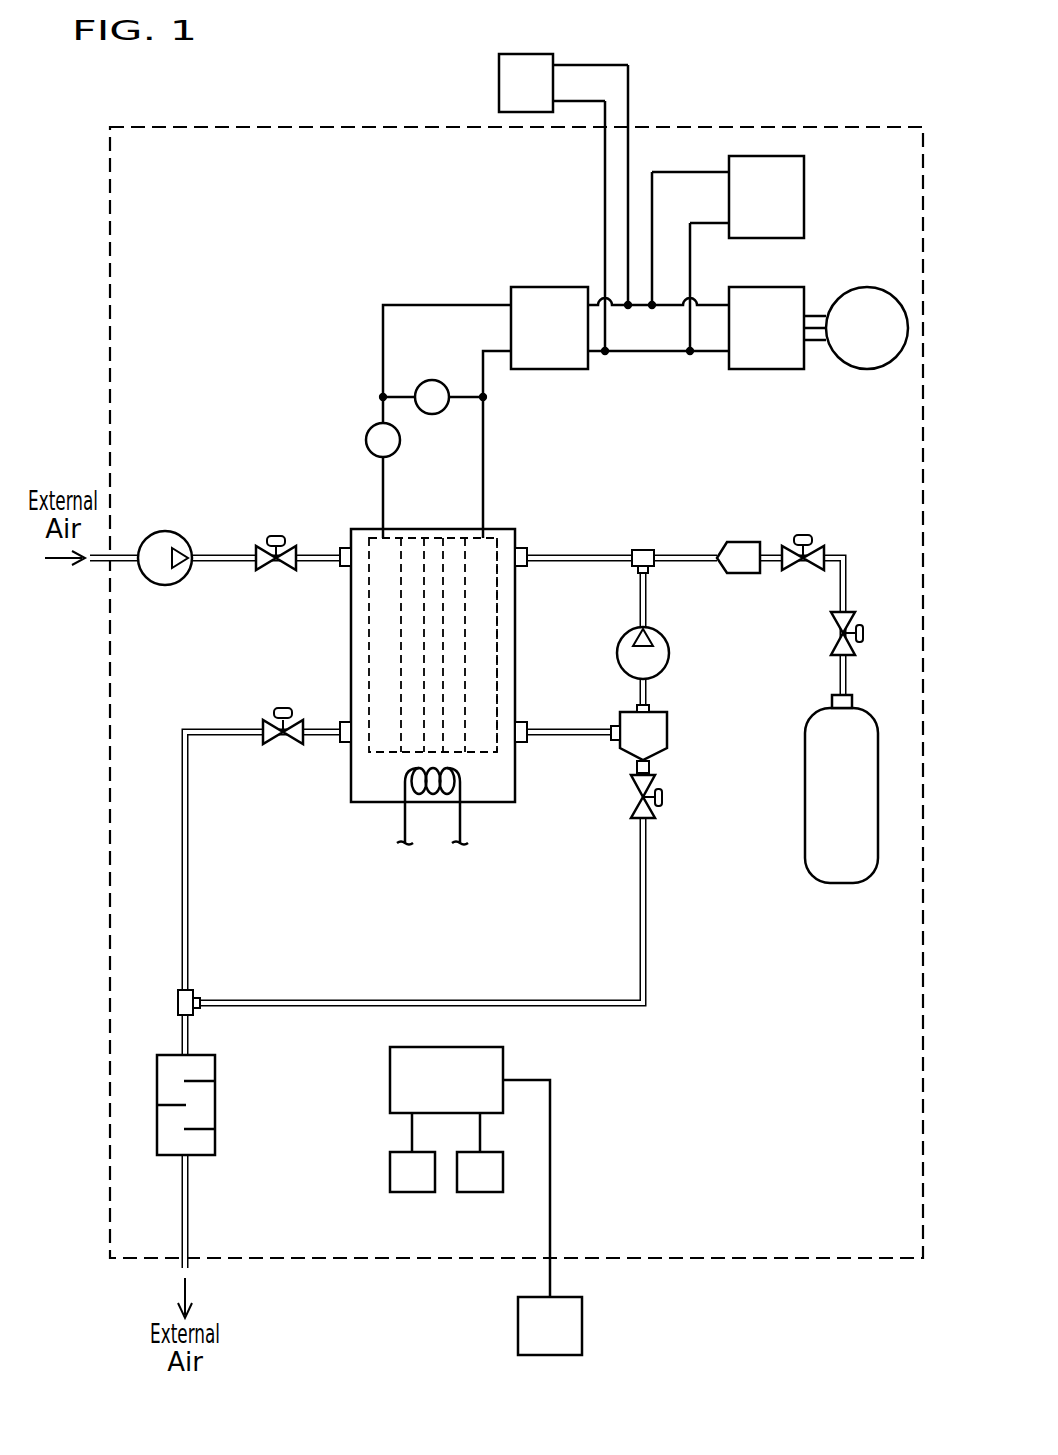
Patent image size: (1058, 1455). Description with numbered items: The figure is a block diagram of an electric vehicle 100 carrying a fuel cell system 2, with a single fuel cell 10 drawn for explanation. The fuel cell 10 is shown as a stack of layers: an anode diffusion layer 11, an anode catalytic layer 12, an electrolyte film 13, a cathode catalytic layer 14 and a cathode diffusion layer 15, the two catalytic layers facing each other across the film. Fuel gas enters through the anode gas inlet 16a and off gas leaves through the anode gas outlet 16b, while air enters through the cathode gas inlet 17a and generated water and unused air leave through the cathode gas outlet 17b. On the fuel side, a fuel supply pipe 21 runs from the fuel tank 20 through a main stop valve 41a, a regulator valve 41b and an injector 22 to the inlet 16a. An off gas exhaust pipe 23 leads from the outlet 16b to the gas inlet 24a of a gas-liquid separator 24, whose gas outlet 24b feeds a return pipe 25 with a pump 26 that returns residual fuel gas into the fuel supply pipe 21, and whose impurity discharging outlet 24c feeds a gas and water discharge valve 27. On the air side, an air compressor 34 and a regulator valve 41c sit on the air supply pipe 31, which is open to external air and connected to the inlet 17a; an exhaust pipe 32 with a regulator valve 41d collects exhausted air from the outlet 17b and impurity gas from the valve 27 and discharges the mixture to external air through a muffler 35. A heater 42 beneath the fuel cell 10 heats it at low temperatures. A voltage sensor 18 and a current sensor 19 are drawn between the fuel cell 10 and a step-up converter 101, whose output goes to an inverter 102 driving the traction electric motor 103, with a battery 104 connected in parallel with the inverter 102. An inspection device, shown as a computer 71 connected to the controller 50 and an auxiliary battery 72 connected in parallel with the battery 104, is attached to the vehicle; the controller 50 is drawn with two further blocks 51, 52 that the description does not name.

The fuel cell system 2 is at (186, 400).
The electric vehicle 100 is at (847, 125).
The fuel cell 10 is at (517, 538).
The anode diffusion layer 11 is at (497, 531).
The anode catalytic layer 12 is at (453, 531).
The electrolyte film 13 is at (435, 531).
The cathode catalytic layer 14 is at (413, 531).
The cathode diffusion layer 15 is at (372, 531).
The anode gas inlet 16a is at (524, 568).
The anode gas outlet 16b is at (527, 722).
The cathode gas inlet 17a is at (343, 568).
The cathode gas outlet 17b is at (340, 722).
The voltage sensor 18 is at (437, 380).
The current sensor 19 is at (366, 440).
The fuel tank 20 is at (850, 885).
The fuel supply pipe 21 is at (848, 580).
The injector 22 is at (740, 542).
The off gas exhaust pipe 23 is at (548, 740).
The gas-liquid separator 24 is at (668, 738).
The gas inlet 24a is at (614, 742).
The gas outlet 24b is at (650, 708).
The impurity discharging outlet 24c is at (652, 768).
The return pipe 25 is at (648, 612).
The pump 26 is at (670, 660).
The gas and water discharge valve 27 is at (660, 812).
The air supply pipe 31 is at (218, 553).
The exhaust pipe 32 is at (189, 933).
The air compressor 34 is at (166, 585).
The muffler 35 is at (215, 1147).
The main stop valve 41a is at (830, 645).
The regulator valve 41b is at (822, 550).
The regulator valve 41c is at (262, 575).
The regulator valve 41d is at (272, 745).
The heater 42 is at (405, 790).
The controller 50 is at (503, 1057).
The memory 51 is at (412, 1192).
The processor 52 is at (480, 1192).
The computer 71 is at (582, 1322).
The auxiliary battery 72 is at (499, 90).
The step-up converter 101 is at (535, 287).
The inverter 102 is at (780, 370).
The electric motor 103 is at (870, 288).
The battery 104 is at (804, 195).